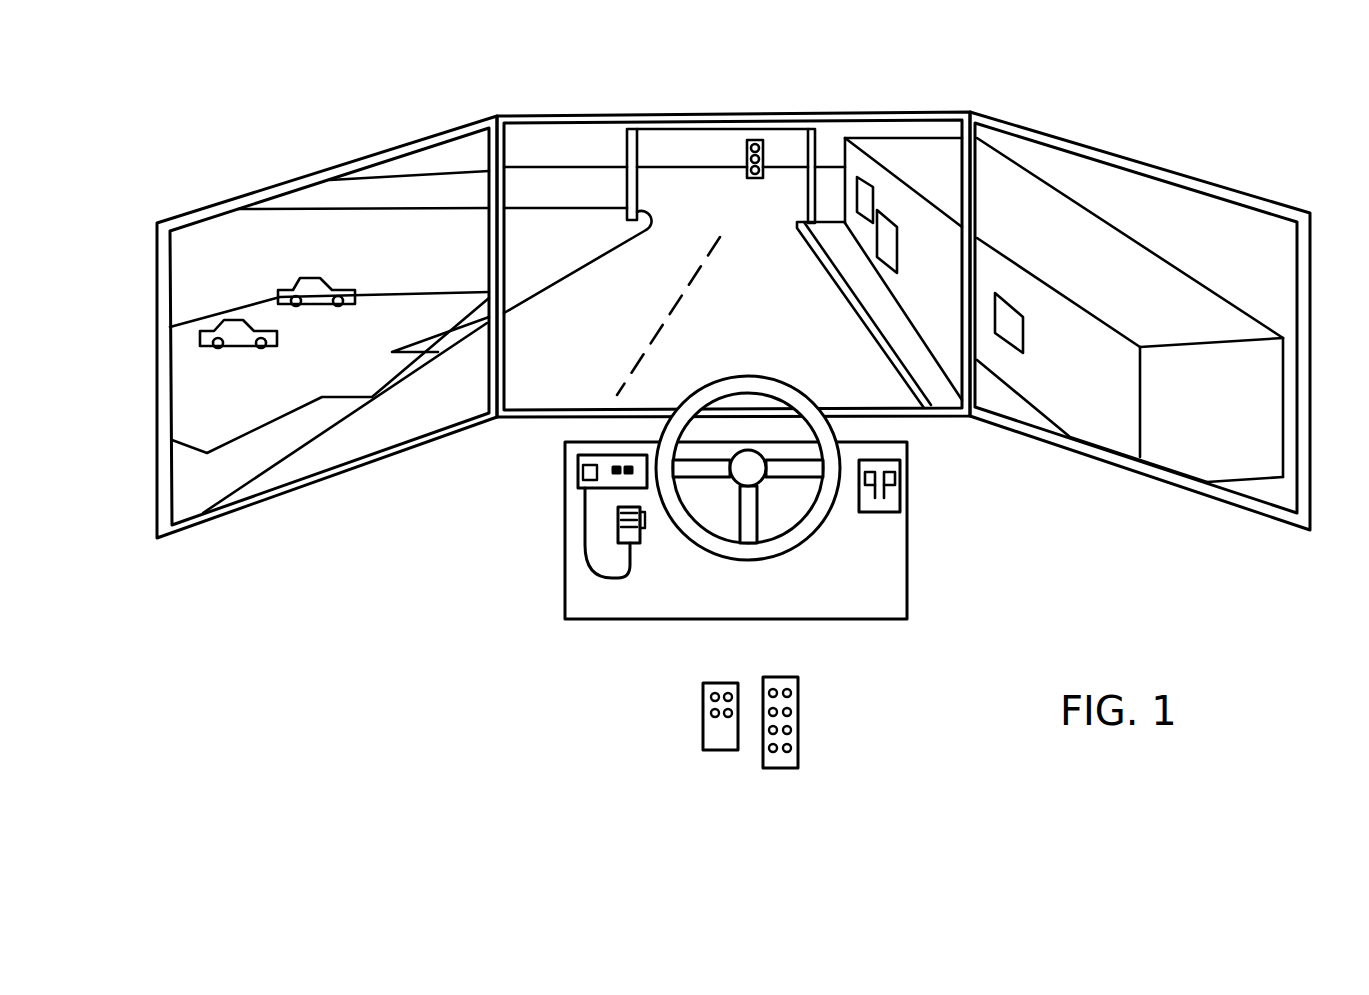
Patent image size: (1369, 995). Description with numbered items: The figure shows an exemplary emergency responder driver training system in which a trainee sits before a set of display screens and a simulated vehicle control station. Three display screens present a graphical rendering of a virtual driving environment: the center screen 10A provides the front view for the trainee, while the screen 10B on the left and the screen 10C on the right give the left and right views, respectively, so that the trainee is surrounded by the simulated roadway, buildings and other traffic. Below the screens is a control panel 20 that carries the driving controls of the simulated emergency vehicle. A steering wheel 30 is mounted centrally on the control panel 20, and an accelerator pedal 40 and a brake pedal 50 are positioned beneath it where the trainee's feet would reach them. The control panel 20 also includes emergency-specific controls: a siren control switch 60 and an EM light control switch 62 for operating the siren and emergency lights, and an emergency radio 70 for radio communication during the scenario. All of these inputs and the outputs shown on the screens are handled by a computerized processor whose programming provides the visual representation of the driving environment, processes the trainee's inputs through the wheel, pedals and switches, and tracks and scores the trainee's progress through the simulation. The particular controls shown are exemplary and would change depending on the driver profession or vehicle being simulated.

The screen 10A is at (697, 112).
The screen 10B is at (307, 173).
The screen 10C is at (1130, 158).
The control panel 20 is at (908, 545).
The steering wheel 30 is at (698, 535).
The accelerator pedal 40 is at (802, 712).
The brake pedal 50 is at (699, 713).
The siren control switch 60 is at (877, 502).
The EM light control switch 62 is at (893, 492).
The emergency radio 70 is at (575, 468).